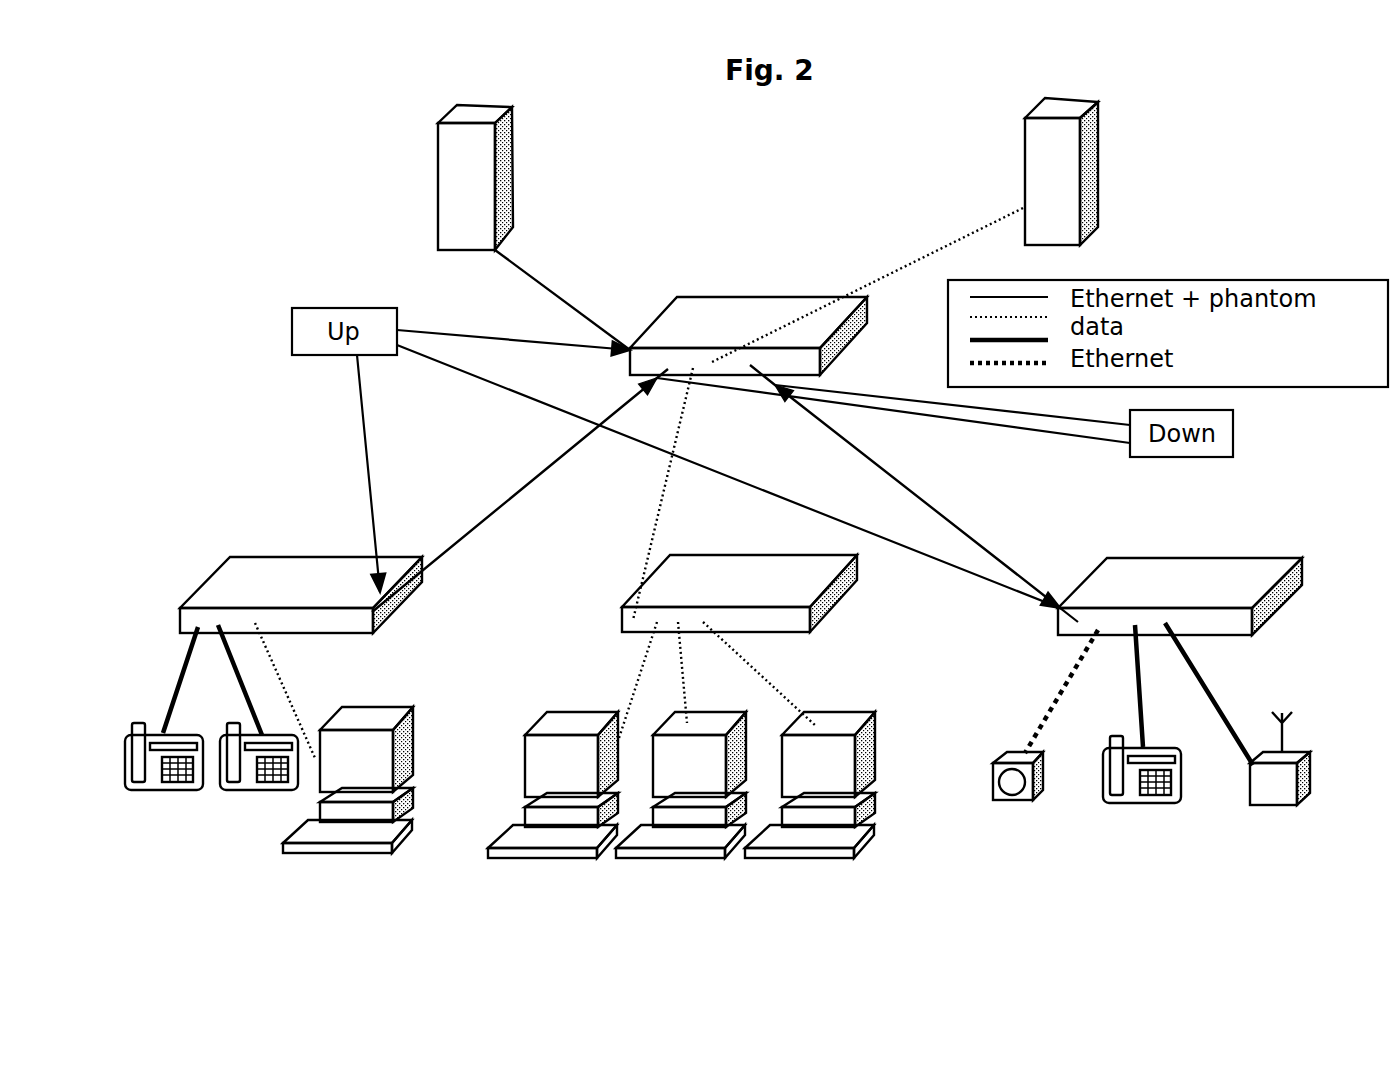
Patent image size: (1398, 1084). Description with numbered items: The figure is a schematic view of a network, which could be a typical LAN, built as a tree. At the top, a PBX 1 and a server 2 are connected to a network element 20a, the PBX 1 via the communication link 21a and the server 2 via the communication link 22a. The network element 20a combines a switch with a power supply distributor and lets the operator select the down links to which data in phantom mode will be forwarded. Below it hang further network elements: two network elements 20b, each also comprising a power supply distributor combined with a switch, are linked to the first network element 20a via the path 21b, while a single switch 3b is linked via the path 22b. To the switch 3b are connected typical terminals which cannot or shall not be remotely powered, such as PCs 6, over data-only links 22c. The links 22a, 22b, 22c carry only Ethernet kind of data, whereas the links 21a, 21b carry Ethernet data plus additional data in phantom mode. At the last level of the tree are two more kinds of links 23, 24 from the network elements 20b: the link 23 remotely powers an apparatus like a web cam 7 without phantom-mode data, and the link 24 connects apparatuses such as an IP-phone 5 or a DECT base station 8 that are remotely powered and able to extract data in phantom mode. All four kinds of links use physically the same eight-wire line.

The PBX 1 is at (502, 163).
The server 2 is at (1097, 158).
The network element 20a is at (715, 310).
The network element 20b is at (270, 553).
The switch 3b is at (835, 612).
The communication link 21a is at (558, 297).
The path 21b is at (483, 520).
The communication link 22a is at (920, 260).
The path 22b is at (680, 435).
The link 22c is at (287, 677).
The link 23 is at (1060, 690).
The link 24 is at (197, 680).
The IP-phone 5 is at (175, 790).
The PC 6 is at (327, 790).
The web cam 7 is at (1017, 802).
The DECT base station 8 is at (1280, 793).